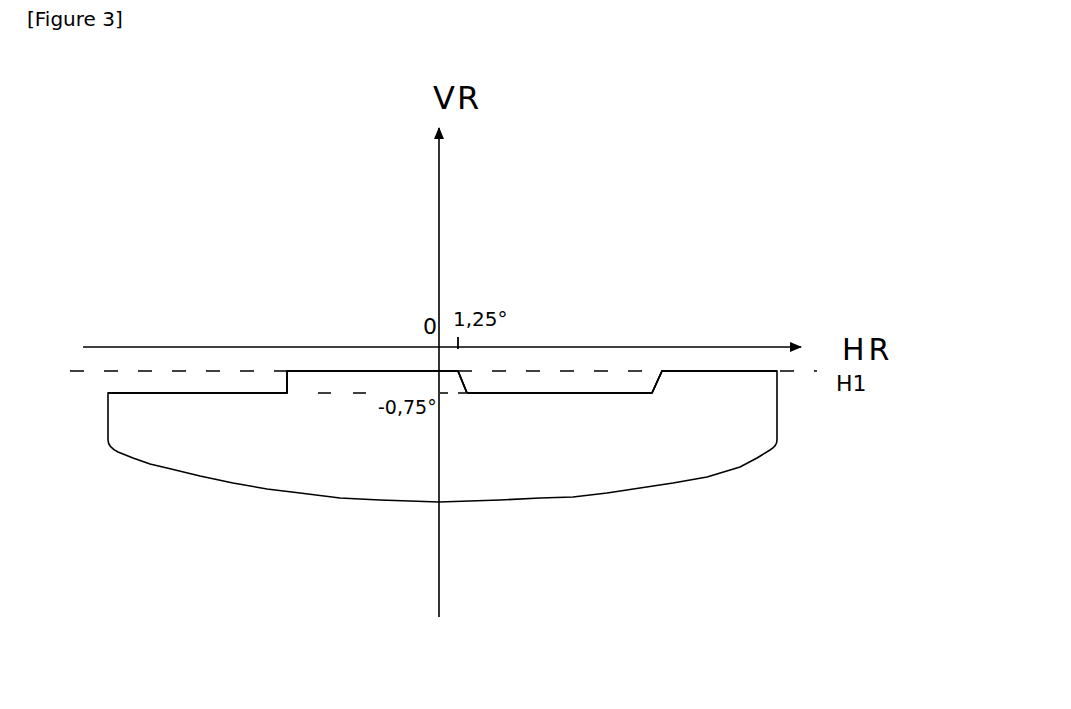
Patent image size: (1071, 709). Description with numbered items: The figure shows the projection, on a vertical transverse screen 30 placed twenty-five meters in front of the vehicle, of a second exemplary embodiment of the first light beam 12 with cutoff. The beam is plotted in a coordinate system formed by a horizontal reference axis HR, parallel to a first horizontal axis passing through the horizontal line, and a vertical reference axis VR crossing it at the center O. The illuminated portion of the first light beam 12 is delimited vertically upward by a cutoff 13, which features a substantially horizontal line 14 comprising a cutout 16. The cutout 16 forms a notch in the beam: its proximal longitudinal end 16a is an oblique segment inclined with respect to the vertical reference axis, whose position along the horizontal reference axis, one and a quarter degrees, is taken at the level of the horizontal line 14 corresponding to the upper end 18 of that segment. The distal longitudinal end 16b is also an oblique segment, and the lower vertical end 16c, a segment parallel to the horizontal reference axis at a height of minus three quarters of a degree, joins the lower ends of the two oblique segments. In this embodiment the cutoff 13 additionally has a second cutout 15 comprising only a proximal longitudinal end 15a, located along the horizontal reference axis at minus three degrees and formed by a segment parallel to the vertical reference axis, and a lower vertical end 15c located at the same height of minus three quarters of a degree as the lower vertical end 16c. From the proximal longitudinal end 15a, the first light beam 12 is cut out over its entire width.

The vertical transverse screen 30 is at (164, 159).
The first light beam with cutoff 12 is at (668, 291).
The cutoff 13 is at (325, 367).
The substantially horizontal line 14 is at (392, 368).
The second cutout 15 is at (144, 385).
The proximal longitudinal end 15a is at (289, 392).
The lower vertical end 15c is at (176, 398).
The cutout 16 is at (537, 380).
The proximal longitudinal end 16a is at (463, 388).
The distal longitudinal end 16b is at (656, 384).
The lower vertical end 16c is at (559, 398).
The upper end 18 is at (459, 370).